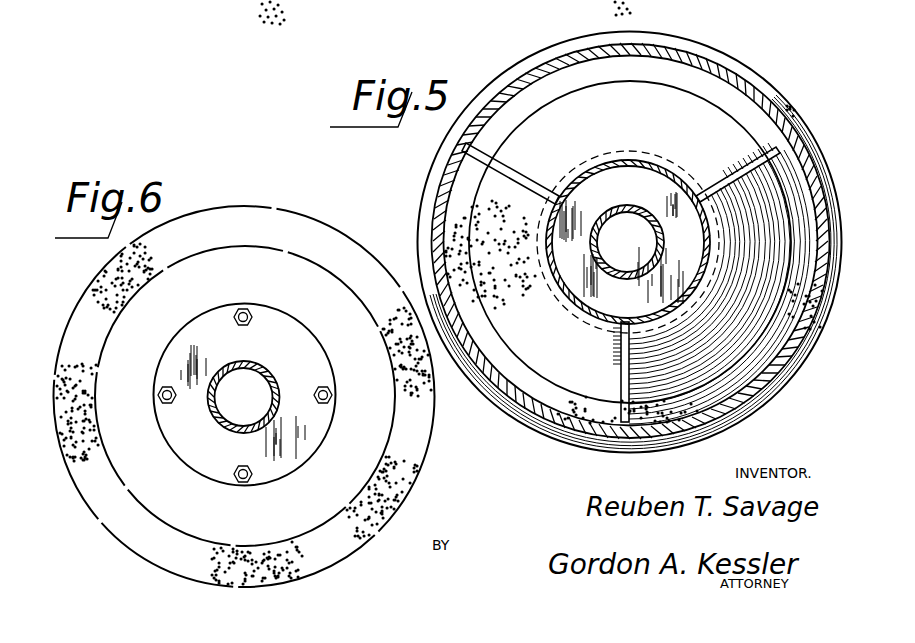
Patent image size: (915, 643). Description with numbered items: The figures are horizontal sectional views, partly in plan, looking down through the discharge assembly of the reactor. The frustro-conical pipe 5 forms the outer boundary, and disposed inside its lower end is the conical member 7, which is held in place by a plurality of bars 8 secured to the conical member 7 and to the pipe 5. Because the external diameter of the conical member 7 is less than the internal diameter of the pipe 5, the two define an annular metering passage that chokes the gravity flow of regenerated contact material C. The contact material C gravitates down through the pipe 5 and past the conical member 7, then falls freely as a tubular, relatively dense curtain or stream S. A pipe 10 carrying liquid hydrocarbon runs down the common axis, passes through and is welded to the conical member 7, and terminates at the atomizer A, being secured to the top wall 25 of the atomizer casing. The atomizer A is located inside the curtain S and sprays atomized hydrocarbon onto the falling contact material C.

In FIG. 5, the frustro-conical pipe 5 is at (742, 84).
In FIG. 5, the conical member 7 is at (672, 108).
In FIG. 5, the bars 8 is at (531, 172).
In FIG. 5, the pipe 10 is at (620, 207).
In FIG. 6, the pipe 10 is at (275, 372).
In FIG. 5, the top wall 25 is at (656, 190).
In FIG. 6, the top wall 25 is at (268, 322).
In FIG. 5, the contact material C is at (455, 197).
In FIG. 6, the contact material C is at (120, 265).
In FIG. 6, the atomizer A is at (330, 350).
In FIG. 6, the curtain or stream S is at (402, 487).